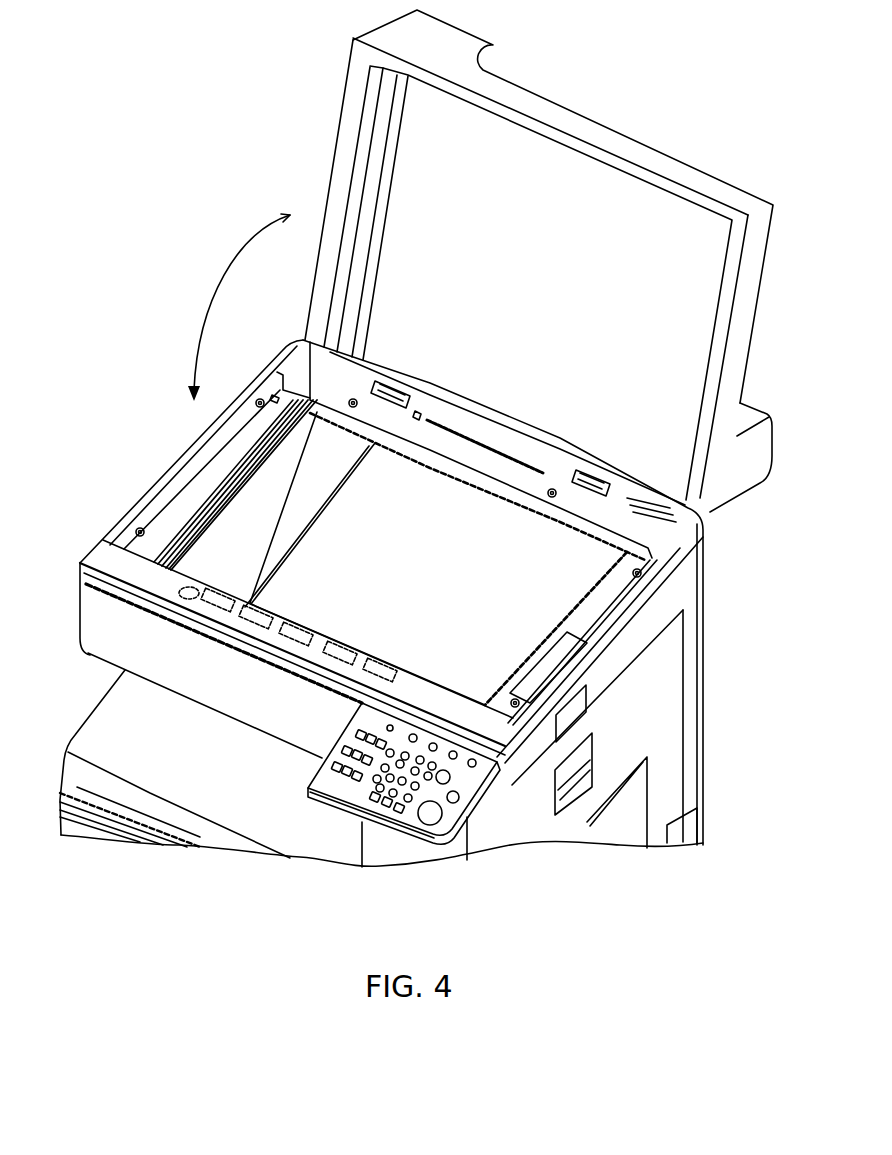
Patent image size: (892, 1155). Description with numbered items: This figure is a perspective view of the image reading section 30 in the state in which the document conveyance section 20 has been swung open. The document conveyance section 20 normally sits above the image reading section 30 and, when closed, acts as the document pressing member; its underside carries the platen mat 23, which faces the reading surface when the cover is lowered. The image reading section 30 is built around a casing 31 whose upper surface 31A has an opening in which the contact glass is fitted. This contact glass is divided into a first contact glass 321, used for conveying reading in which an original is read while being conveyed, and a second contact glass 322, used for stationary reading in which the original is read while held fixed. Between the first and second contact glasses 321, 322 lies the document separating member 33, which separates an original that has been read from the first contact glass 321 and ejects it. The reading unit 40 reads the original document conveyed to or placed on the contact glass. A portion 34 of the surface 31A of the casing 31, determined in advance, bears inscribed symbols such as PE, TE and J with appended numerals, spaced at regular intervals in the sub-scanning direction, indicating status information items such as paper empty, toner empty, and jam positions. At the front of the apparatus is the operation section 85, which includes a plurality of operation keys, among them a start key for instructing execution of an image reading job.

The document conveyance section 20 is at (681, 114).
The platen mat 23 is at (688, 199).
The image reading section 30 is at (149, 419).
The casing 31 is at (671, 603).
The surface 31A is at (590, 623).
The first contact glass 321 is at (183, 512).
The second contact glass 322 is at (543, 607).
The document separating member 33 is at (220, 487).
The portion 34 is at (172, 594).
The reading unit 40 is at (307, 468).
The operation section 85 is at (453, 833).